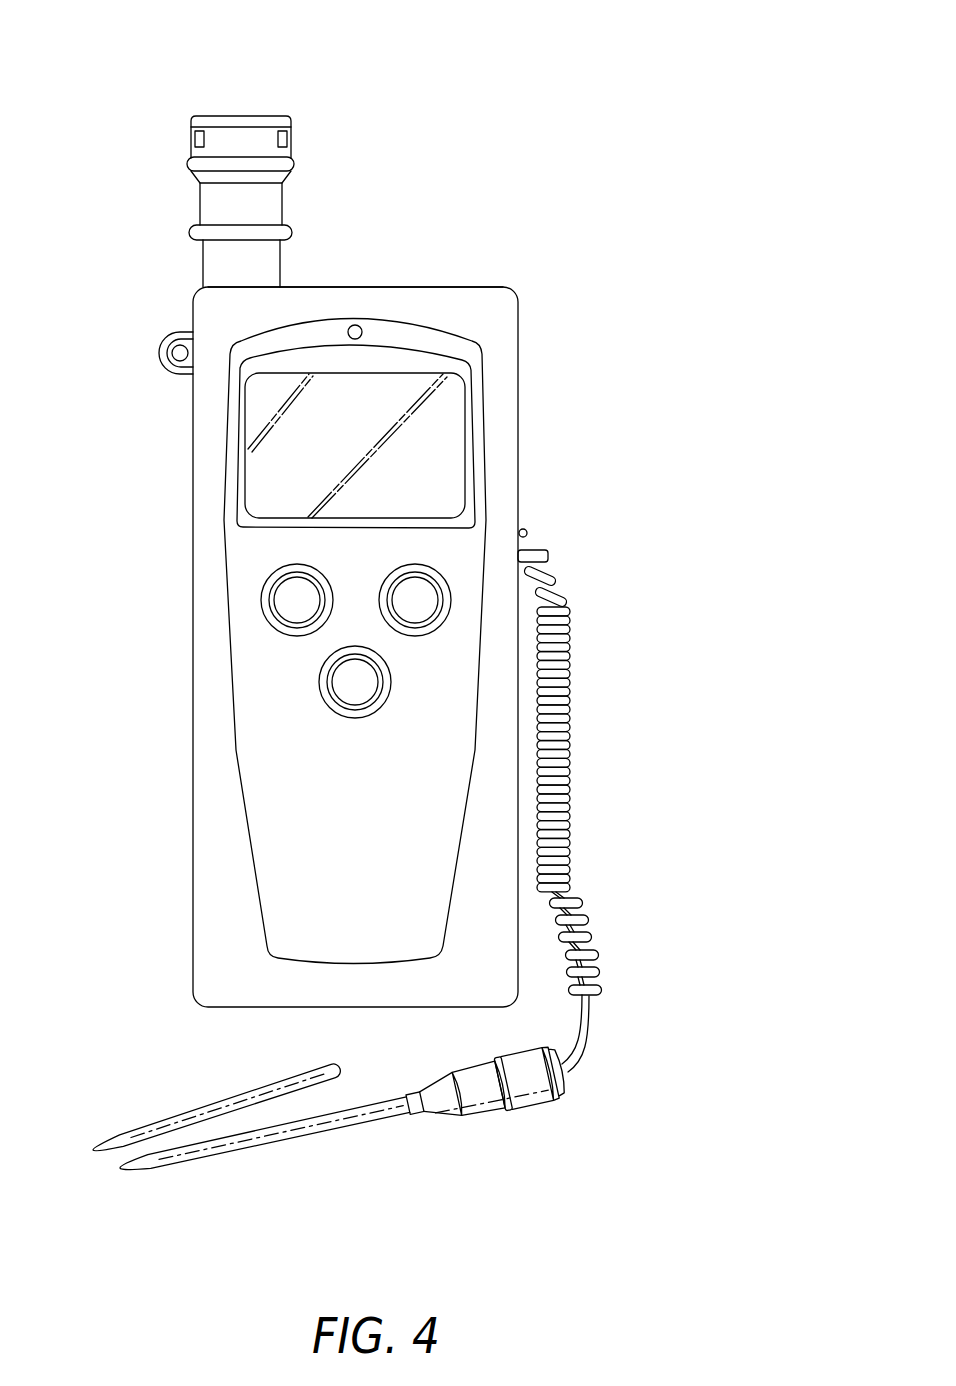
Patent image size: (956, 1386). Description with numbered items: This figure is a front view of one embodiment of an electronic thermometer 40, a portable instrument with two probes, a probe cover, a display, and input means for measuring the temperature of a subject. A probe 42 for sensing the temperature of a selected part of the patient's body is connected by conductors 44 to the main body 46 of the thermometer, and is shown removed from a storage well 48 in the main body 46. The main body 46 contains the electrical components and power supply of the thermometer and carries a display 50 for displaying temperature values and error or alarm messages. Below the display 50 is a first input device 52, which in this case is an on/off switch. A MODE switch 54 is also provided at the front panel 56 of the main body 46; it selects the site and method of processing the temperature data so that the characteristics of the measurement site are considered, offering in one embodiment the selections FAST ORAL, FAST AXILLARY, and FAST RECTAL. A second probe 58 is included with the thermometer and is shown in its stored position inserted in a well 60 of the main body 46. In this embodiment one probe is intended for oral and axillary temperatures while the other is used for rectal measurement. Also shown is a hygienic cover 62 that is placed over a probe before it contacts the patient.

The electronic thermometer 40 is at (680, 150).
The probe 42 is at (287, 1138).
The conductors 44 is at (572, 722).
The main body 46 is at (518, 328).
The storage well 48 is at (453, 287).
The display 50 is at (265, 465).
The first input device 52 is at (451, 593).
The MODE switch 54 is at (261, 600).
The front panel 56 is at (270, 828).
The second probe 58 is at (242, 112).
The well 60 is at (213, 287).
The hygienic cover 62 is at (152, 1125).